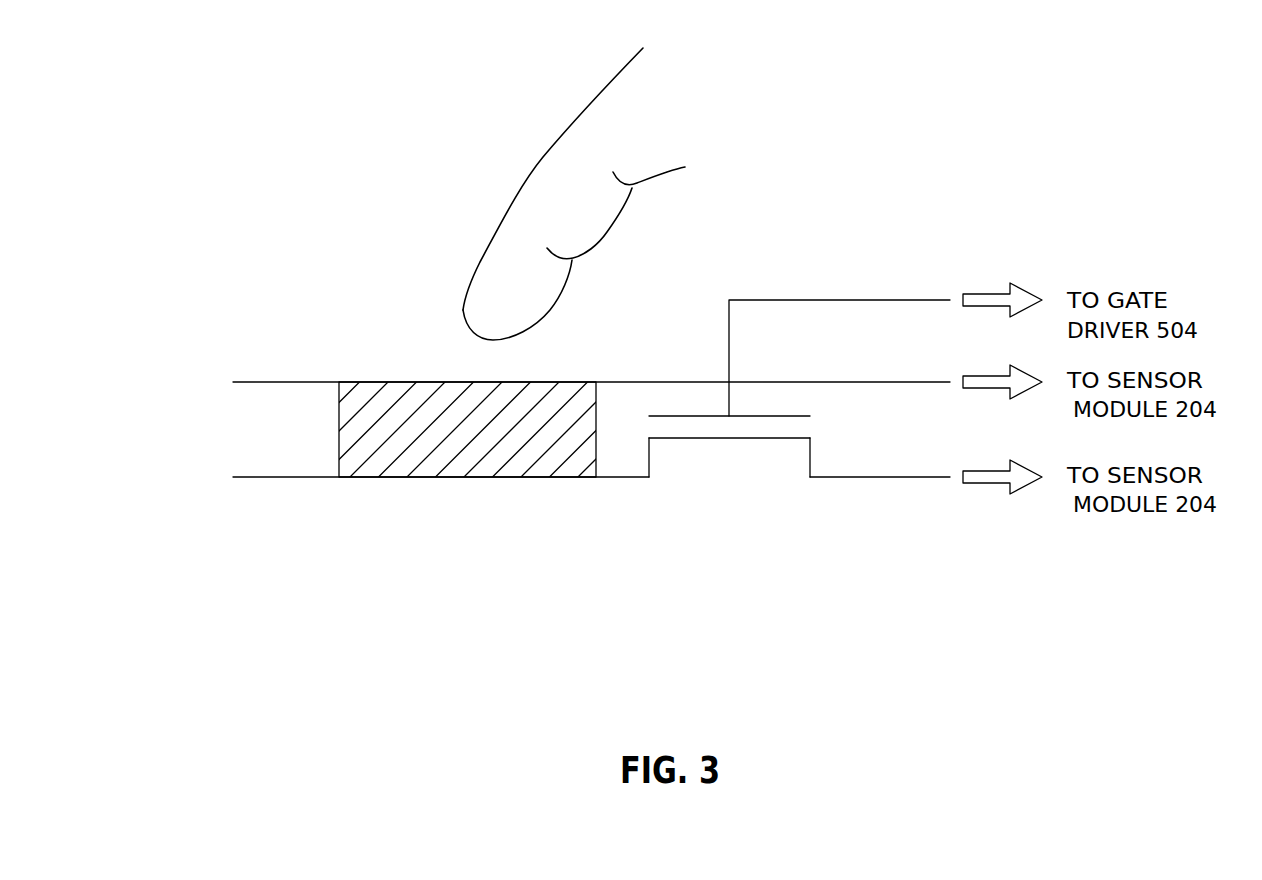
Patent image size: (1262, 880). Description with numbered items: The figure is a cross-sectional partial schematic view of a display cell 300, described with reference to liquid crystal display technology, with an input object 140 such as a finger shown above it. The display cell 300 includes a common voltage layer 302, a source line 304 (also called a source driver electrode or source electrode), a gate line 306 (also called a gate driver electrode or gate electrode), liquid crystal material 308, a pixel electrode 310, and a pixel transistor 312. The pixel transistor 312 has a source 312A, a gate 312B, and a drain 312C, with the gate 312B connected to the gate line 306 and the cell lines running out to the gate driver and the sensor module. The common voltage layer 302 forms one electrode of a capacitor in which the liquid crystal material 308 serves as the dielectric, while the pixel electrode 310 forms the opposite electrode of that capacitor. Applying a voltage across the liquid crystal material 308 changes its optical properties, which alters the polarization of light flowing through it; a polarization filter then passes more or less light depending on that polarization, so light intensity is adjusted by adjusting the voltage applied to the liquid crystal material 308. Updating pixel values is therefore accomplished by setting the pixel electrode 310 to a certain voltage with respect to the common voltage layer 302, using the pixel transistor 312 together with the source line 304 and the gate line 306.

The input object 140 is at (493, 238).
The display cell 300 is at (443, 349).
The common voltage layer 302 is at (813, 380).
The source line 304 is at (908, 477).
The gate line 306 is at (845, 300).
The liquid crystal material 308 is at (339, 431).
The pixel electrode 310 is at (320, 477).
The pixel transistor 312 is at (714, 469).
The source 312A is at (818, 477).
The gate 312B is at (725, 400).
The drain 312C is at (620, 477).